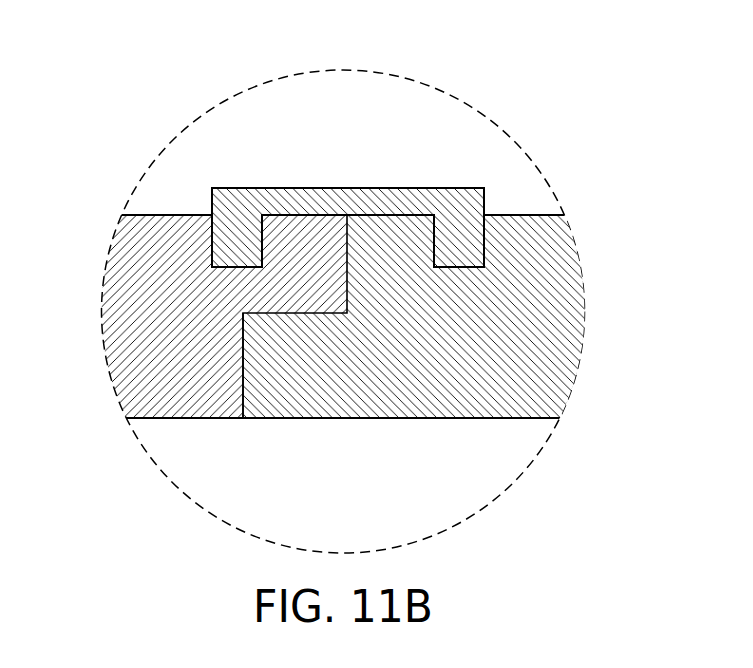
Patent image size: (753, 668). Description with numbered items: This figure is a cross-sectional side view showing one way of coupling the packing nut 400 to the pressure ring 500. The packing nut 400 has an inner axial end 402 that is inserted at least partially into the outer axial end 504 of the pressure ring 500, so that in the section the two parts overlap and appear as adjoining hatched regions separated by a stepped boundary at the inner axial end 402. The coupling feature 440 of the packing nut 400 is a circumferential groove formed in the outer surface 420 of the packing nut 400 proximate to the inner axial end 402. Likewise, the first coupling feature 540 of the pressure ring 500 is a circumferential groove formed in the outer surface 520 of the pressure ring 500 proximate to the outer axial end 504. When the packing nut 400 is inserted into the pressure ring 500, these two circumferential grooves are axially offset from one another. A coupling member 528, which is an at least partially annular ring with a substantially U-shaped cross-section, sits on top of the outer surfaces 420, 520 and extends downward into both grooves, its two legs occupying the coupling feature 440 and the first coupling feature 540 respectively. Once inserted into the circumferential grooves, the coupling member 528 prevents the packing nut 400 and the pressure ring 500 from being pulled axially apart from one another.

The packing nut 400 is at (573, 292).
The inner axial end 402 is at (243, 388).
The outer surface 420 is at (553, 215).
The coupling feature 440 is at (492, 243).
The pressure ring 500 is at (125, 290).
The outer axial end 504 is at (243, 363).
The outer surface 520 is at (152, 213).
The coupling member 528 is at (337, 188).
The first coupling feature 540 is at (205, 235).